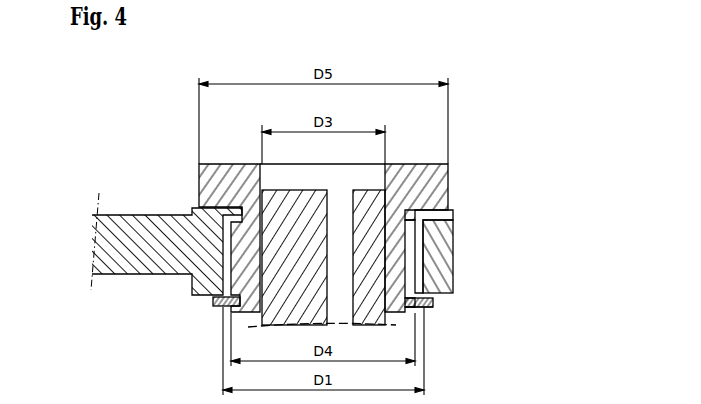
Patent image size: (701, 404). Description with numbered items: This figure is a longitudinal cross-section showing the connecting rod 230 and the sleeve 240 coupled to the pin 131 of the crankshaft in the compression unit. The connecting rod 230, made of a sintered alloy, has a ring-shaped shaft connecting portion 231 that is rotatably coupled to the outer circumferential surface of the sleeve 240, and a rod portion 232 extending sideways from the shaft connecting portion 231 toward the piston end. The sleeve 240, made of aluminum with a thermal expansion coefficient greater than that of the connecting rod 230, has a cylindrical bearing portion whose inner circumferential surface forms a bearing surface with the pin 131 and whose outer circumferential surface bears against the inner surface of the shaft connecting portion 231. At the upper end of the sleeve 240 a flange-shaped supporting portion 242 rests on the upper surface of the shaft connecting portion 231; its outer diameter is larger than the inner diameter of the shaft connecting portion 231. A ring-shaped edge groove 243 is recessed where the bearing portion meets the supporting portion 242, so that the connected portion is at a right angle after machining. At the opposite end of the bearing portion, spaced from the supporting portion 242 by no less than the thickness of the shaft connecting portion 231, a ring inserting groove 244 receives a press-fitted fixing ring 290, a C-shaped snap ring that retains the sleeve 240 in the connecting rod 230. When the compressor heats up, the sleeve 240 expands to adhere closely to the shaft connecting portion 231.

The sleeve 240 is at (358, 205).
The supporting portion 242 is at (420, 176).
The pin 131 is at (375, 202).
The connecting rod 230 is at (166, 254).
The rod portion 232 is at (126, 262).
The shaft connecting portion 231 is at (207, 283).
The edge groove 243 is at (424, 221).
The ring inserting groove 244 is at (408, 254).
The fixing ring 290 is at (434, 303).